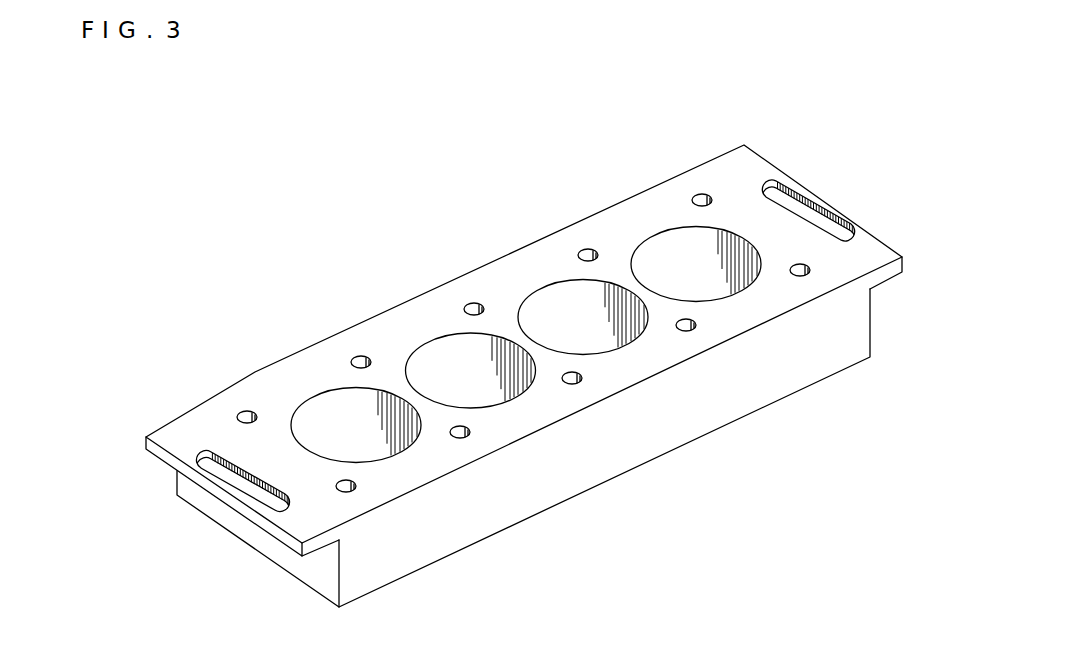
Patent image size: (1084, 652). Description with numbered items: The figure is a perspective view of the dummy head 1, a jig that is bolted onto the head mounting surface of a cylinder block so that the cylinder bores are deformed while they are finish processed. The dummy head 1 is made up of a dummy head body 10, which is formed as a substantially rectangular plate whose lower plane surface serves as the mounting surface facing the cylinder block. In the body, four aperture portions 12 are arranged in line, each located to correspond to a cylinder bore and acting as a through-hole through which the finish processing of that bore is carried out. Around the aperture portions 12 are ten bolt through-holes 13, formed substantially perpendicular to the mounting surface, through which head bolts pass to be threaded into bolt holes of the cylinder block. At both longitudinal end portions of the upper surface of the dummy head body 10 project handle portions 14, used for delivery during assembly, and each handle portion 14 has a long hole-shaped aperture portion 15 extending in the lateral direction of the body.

The dummy head 1 is at (437, 183).
The dummy head body 10 is at (378, 314).
The aperture portion 12 is at (320, 425).
The bolt through-hole 13 is at (245, 413).
The handle portion 14 is at (146, 441).
The long hole-shaped aperture portion 15 is at (206, 458).